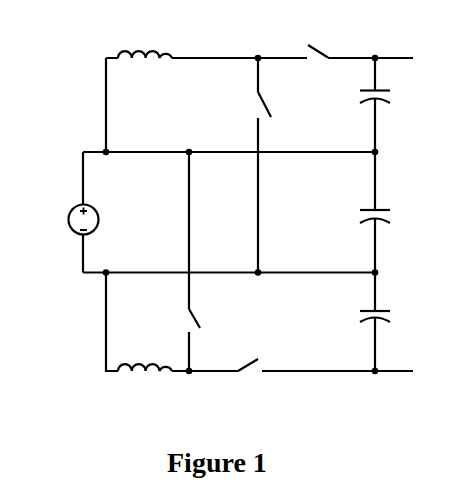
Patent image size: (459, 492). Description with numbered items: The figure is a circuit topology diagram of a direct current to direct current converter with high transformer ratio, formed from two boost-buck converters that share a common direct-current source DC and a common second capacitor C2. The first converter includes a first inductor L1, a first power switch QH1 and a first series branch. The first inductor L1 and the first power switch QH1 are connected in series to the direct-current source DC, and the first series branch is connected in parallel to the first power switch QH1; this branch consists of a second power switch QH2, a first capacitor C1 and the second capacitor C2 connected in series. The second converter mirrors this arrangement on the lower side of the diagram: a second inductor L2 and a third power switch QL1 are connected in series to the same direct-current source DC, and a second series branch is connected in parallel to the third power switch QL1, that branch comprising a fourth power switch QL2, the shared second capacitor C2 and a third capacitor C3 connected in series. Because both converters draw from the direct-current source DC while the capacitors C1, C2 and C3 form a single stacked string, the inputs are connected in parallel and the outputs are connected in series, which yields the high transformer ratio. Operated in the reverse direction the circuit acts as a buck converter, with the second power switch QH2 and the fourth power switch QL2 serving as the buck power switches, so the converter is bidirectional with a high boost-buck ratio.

The first inductor L1 is at (145, 42).
The second inductor L2 is at (145, 383).
The first power switch QH1 is at (244, 103).
The second power switch QH2 is at (312, 39).
The third power switch QL1 is at (175, 318).
The fourth power switch QL2 is at (252, 379).
The first capacitor C1 is at (359, 97).
The second capacitor C2 is at (359, 217).
The third capacitor C3 is at (359, 317).
The direct-current source DC is at (66, 220).